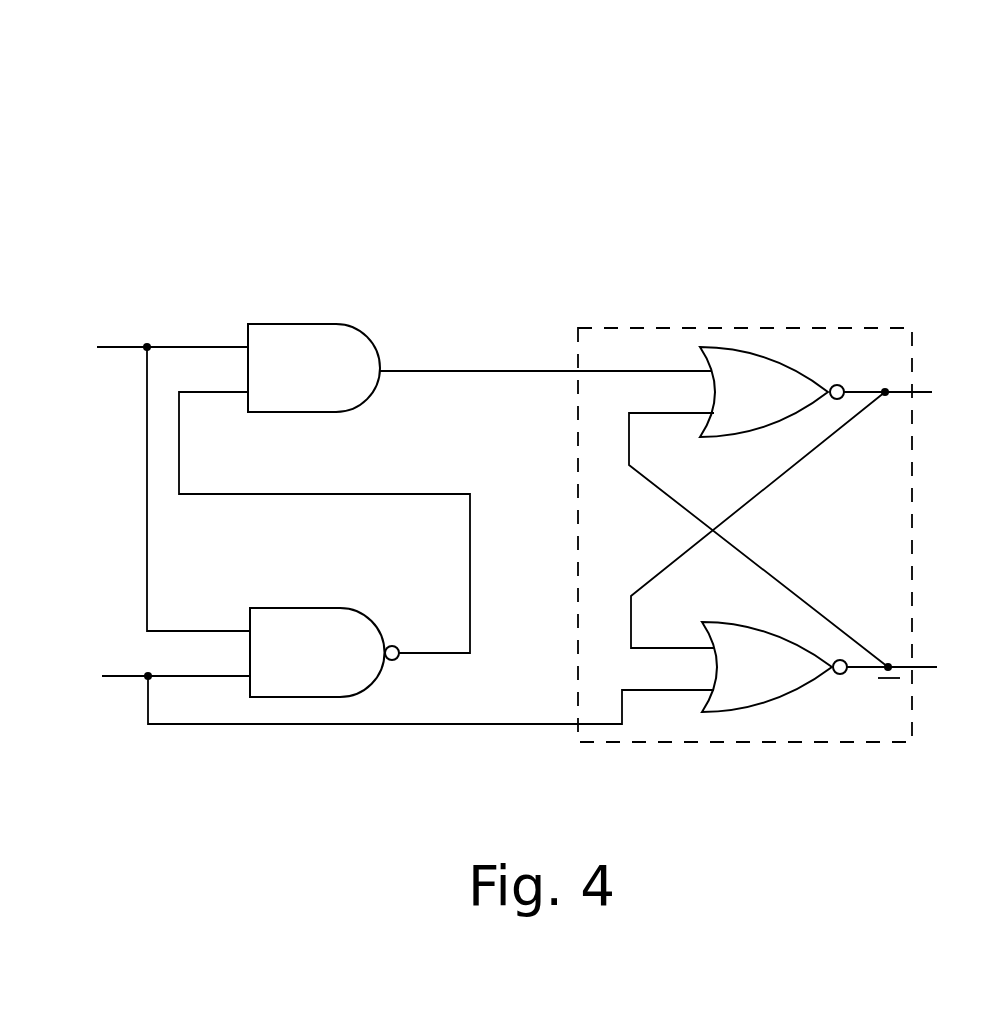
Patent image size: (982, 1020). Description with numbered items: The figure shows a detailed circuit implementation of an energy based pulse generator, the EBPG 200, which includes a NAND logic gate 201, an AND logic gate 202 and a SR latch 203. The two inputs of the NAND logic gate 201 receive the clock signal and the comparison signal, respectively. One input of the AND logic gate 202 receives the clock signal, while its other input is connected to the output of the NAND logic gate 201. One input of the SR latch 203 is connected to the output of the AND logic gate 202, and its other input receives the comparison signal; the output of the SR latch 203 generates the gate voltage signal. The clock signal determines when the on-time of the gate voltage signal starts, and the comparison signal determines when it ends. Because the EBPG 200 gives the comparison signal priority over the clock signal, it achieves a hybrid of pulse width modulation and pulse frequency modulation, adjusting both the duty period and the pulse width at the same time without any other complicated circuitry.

The EBPG 200 is at (257, 255).
The NAND logic gate 201 is at (297, 697).
The AND logic gate 202 is at (327, 322).
The SR latch 203 is at (857, 325).